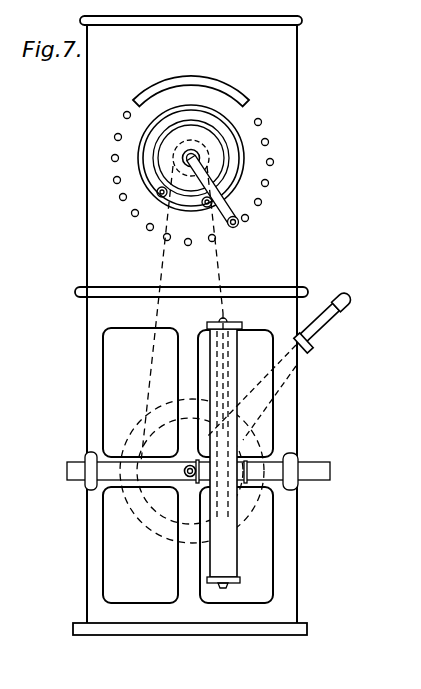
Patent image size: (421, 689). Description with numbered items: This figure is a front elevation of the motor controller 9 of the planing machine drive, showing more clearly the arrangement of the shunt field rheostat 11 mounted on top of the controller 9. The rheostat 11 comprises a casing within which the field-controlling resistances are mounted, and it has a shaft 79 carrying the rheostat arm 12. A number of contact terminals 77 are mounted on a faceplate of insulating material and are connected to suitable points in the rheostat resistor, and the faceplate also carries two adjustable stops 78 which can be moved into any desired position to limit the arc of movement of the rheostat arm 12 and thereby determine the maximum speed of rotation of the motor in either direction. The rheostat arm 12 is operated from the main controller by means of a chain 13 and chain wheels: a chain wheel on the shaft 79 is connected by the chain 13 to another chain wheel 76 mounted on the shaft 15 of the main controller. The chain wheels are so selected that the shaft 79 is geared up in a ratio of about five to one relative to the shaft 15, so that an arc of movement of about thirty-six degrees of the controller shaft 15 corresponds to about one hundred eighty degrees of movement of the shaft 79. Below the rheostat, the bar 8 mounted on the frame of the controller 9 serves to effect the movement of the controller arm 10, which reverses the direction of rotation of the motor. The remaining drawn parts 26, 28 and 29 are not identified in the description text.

The bar 8 is at (308, 482).
The motor controller 9 is at (211, 465).
The controller arm 10 is at (302, 356).
The shunt field rheostat 11 is at (297, 168).
The rheostat arm 12 is at (217, 214).
The chain 13 is at (222, 266).
The shaft of the main controller 15 is at (208, 437).
The column 26 is at (238, 356).
The plate 28 is at (247, 487).
The collar 29 is at (92, 484).
The chain wheel 76 is at (158, 513).
The contact terminals 77 is at (275, 137).
The adjustable stops 78 is at (203, 205).
The shaft 79 is at (183, 161).